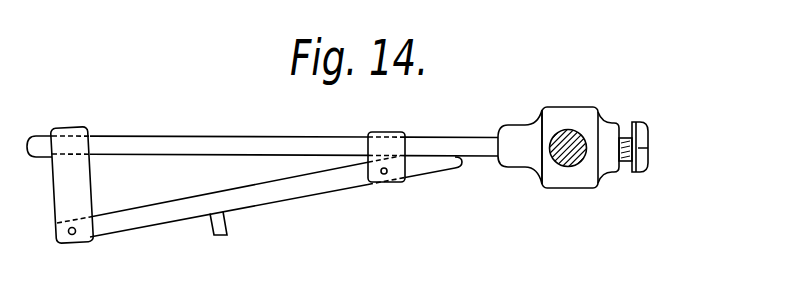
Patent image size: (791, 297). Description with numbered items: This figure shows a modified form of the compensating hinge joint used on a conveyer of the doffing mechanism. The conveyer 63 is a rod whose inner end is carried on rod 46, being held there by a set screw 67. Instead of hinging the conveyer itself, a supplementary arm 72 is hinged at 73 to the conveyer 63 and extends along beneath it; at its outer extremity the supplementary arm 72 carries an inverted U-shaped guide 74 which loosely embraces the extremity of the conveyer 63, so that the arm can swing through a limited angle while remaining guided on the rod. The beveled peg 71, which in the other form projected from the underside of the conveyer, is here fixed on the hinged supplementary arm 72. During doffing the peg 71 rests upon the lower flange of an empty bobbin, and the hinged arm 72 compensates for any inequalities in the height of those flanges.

The rod 46 is at (568, 136).
The conveyer 63 is at (250, 143).
The set screw 67 is at (637, 133).
The peg 71 is at (219, 236).
The supplementary arm 72 is at (302, 189).
The hinge 73 is at (392, 174).
The inverted U-shaped guide 74 is at (72, 185).